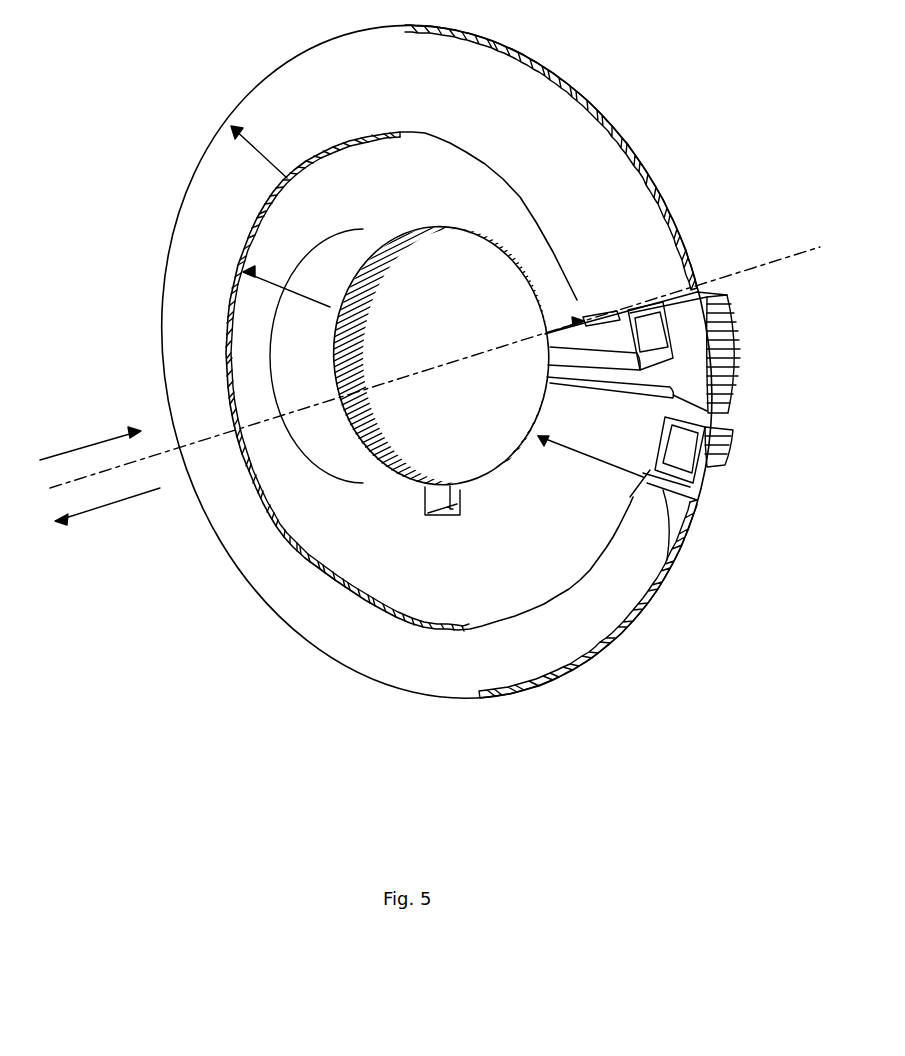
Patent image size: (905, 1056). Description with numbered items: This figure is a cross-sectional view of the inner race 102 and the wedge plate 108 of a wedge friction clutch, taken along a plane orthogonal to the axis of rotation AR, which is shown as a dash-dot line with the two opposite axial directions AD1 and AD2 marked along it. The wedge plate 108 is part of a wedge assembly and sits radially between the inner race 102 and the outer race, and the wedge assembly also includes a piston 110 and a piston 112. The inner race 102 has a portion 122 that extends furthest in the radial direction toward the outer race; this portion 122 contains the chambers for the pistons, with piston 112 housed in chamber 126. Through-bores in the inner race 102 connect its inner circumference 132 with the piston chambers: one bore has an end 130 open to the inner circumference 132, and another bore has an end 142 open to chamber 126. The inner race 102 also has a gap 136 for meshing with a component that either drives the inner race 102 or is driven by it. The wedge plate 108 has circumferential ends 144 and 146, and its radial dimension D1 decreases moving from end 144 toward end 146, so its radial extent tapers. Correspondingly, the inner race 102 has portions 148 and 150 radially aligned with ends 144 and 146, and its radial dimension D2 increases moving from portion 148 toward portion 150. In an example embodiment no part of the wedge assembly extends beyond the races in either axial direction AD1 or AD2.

The inner race 102 is at (413, 162).
The wedge plate 108 is at (578, 143).
The piston 110 is at (670, 320).
The piston 112 is at (703, 482).
The portion 122 is at (691, 357).
The chamber 126 is at (707, 417).
The end 130 is at (550, 354).
The inner circumference 132 is at (383, 440).
The gap 136 is at (437, 503).
The end 142 is at (547, 380).
The circumferential end 144 is at (600, 311).
The circumferential end 146 is at (667, 560).
The portion 148 is at (547, 335).
The portion 150 is at (600, 460).
The axis of rotation AR is at (395, 372).
The dimension D1 is at (251, 147).
The dimension D2 is at (292, 293).
The axial direction AD1 is at (107, 507).
The axial direction AD2 is at (70, 452).